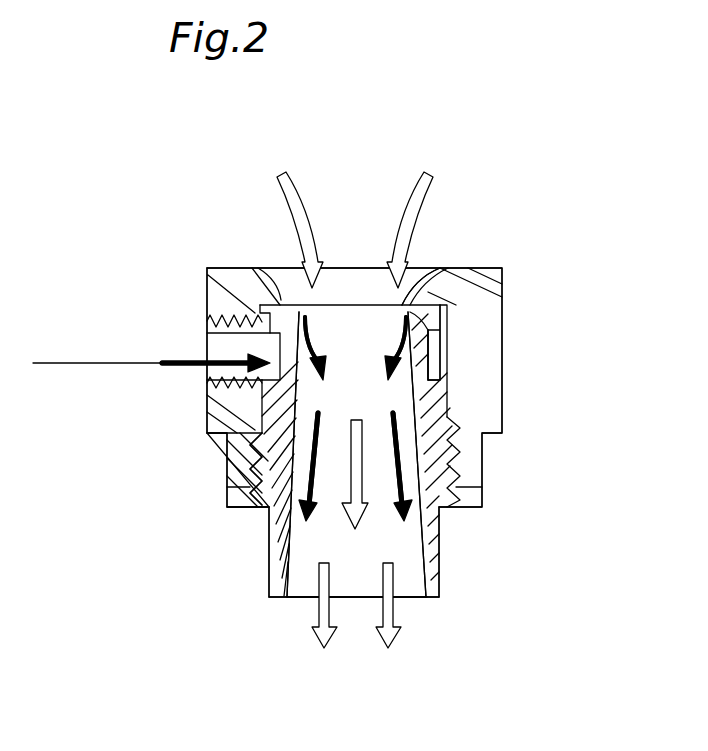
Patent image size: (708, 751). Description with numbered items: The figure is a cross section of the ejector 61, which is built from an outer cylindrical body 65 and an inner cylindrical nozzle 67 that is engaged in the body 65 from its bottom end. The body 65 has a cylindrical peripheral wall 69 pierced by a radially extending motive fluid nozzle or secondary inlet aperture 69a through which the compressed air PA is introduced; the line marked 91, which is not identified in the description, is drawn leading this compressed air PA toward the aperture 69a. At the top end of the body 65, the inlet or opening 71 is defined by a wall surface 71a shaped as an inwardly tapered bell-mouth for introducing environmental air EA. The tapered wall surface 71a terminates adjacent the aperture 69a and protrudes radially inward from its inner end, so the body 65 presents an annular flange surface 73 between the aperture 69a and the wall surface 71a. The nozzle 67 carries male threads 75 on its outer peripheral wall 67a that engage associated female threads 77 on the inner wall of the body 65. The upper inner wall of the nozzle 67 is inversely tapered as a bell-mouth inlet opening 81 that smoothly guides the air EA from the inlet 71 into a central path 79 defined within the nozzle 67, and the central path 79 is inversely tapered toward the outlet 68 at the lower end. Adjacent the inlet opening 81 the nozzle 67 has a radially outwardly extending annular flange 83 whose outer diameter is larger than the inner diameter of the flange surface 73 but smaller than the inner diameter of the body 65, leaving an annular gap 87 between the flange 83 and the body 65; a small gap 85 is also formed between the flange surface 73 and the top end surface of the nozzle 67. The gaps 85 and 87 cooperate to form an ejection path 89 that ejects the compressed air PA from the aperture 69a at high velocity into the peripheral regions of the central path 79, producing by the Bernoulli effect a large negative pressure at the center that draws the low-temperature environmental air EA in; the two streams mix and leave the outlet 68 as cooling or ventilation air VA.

The ejector 61 is at (160, 222).
The outer cylindrical body 65 is at (503, 282).
The inner cylindrical nozzle 67 is at (442, 537).
The outer peripheral wall 67a is at (270, 557).
The outlet 68 is at (413, 587).
The cylindrical peripheral wall 69 is at (207, 288).
The motive fluid nozzle or secondary inlet aperture 69a is at (207, 372).
The inlet or opening 71 is at (428, 283).
The tapered wall surface 71a is at (278, 300).
The annular flange surface 73 is at (255, 313).
The male threads 75 is at (248, 466).
The female threads 77 is at (263, 507).
The central path 79 is at (374, 395).
The inlet opening 81 is at (405, 303).
The annular flange 83 is at (448, 345).
The small gap 85 is at (445, 321).
The annular gap 87 is at (440, 335).
The ejection path 89 is at (588, 296).
The pressurized air supply line 91 is at (64, 365).
The compressed air PA is at (168, 362).
The environmental air EA is at (407, 190).
The cooling or ventilation air VA is at (386, 644).